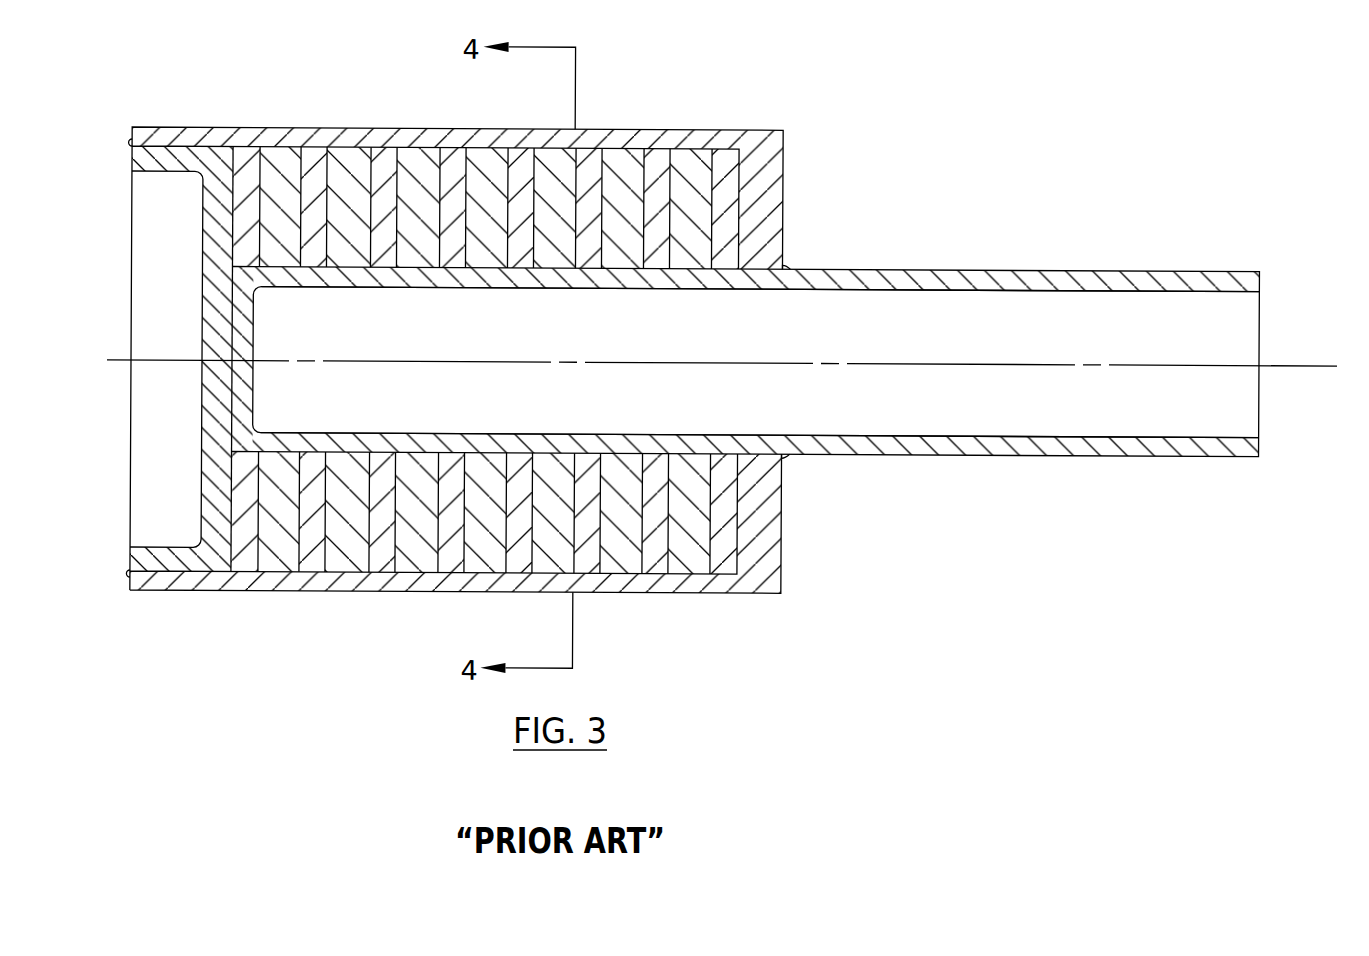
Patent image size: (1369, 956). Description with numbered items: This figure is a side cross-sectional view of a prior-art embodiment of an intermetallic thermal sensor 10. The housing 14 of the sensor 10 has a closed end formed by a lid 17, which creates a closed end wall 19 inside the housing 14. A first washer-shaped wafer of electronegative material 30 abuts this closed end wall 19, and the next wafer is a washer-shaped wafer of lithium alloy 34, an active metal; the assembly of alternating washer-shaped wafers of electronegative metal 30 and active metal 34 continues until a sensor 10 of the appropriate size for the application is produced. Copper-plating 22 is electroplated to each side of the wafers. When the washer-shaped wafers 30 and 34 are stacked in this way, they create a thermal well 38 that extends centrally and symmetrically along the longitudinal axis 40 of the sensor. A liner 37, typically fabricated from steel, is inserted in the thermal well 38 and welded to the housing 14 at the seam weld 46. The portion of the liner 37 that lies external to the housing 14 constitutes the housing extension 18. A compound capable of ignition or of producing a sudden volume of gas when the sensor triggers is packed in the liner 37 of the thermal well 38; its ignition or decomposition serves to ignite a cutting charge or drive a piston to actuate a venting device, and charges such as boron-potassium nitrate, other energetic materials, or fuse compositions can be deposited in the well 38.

The intermetallic thermal sensor 10 is at (708, 350).
The housing 14 is at (432, 328).
The lid 17 is at (203, 240).
The closed end wall 19 is at (243, 212).
The housing extension 18 is at (724, 351).
The copper-plating 22 is at (711, 229).
The washer-shaped wafer of electronegative material 30 is at (244, 160).
The washer-shaped wafer of lithium alloy 34 is at (273, 157).
The liner 37 is at (730, 288).
The thermal well 38 is at (450, 403).
The longitudinal axis 40 is at (1135, 360).
The seam weld 46 is at (791, 457).